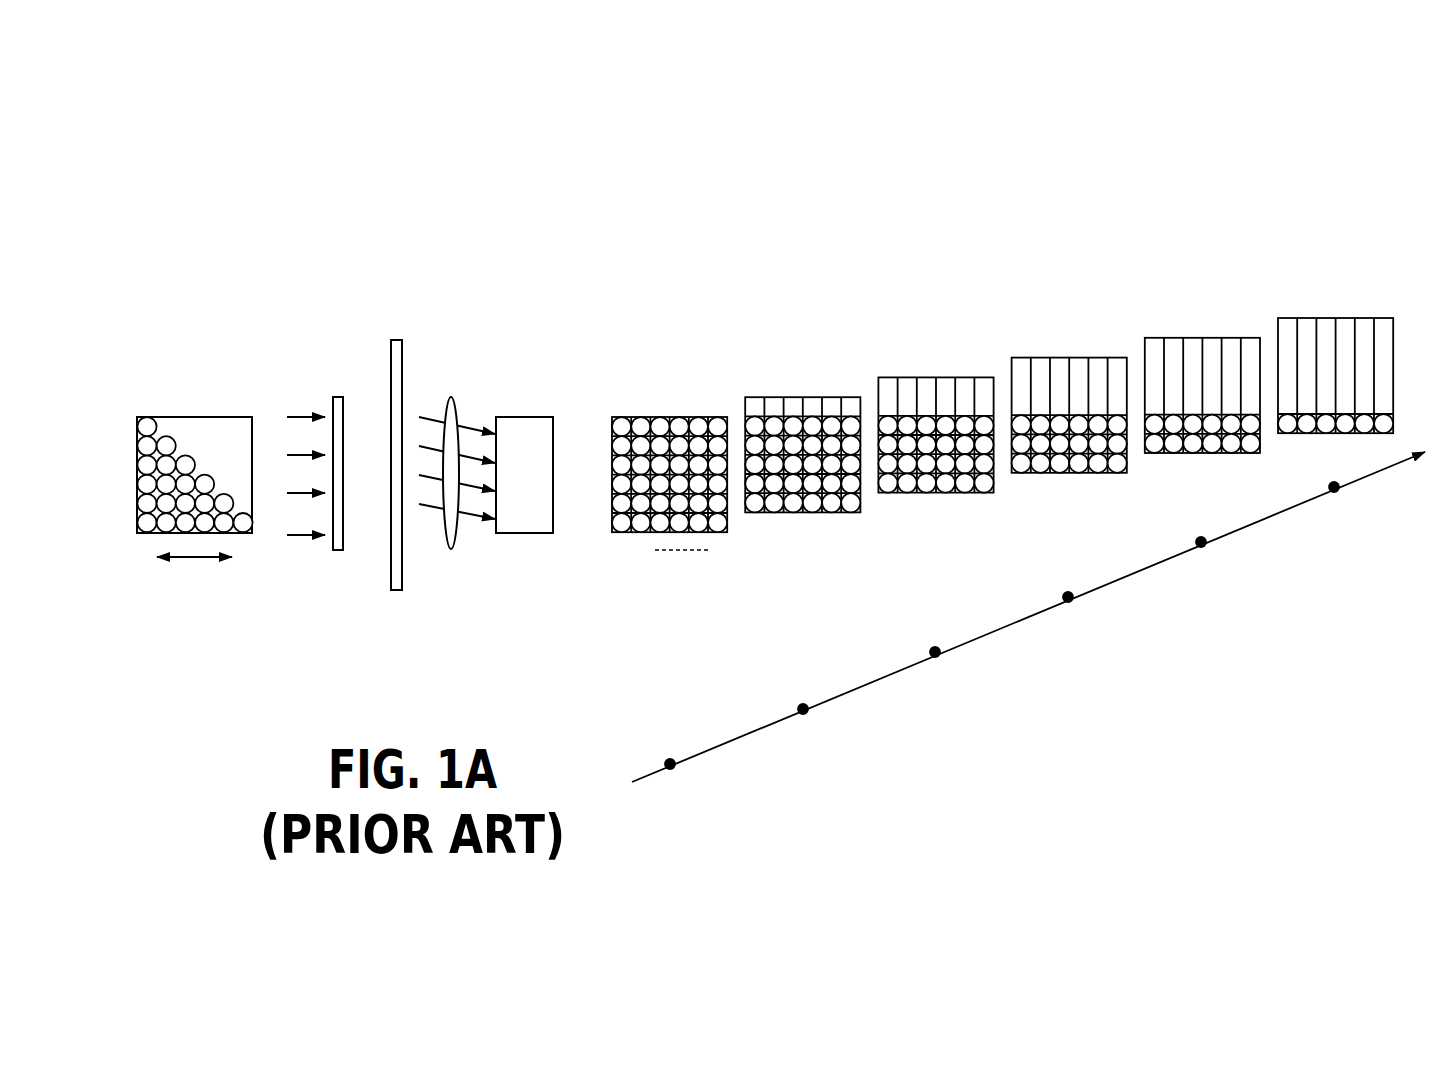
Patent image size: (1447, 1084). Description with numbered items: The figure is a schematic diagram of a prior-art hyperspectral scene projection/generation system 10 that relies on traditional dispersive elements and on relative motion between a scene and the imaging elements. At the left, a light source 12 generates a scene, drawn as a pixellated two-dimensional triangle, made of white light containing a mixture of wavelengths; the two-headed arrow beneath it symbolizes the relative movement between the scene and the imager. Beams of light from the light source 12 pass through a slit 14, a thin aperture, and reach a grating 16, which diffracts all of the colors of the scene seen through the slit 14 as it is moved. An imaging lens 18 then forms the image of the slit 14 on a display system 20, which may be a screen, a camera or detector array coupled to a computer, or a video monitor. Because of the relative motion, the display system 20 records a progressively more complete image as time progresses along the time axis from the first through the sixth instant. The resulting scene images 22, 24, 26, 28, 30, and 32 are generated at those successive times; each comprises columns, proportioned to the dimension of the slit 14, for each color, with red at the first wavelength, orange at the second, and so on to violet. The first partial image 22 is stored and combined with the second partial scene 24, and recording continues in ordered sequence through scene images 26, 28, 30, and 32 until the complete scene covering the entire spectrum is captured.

The hyperspectral scene projection/generation system 10 is at (562, 198).
The light source 12 is at (193, 417).
The slit 14 is at (338, 397).
The grating 16 is at (393, 340).
The imaging lens 18 is at (451, 397).
The display system 20 is at (517, 417).
The scene image 22 is at (612, 427).
The scene image 24 is at (747, 405).
The scene image 26 is at (878, 385).
The scene image 28 is at (1012, 367).
The scene image 30 is at (1145, 343).
The scene image 32 is at (1278, 323).